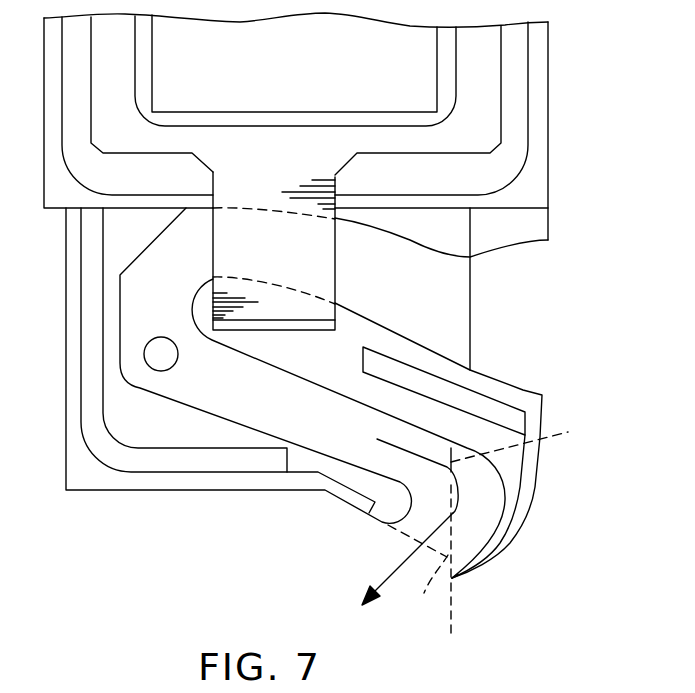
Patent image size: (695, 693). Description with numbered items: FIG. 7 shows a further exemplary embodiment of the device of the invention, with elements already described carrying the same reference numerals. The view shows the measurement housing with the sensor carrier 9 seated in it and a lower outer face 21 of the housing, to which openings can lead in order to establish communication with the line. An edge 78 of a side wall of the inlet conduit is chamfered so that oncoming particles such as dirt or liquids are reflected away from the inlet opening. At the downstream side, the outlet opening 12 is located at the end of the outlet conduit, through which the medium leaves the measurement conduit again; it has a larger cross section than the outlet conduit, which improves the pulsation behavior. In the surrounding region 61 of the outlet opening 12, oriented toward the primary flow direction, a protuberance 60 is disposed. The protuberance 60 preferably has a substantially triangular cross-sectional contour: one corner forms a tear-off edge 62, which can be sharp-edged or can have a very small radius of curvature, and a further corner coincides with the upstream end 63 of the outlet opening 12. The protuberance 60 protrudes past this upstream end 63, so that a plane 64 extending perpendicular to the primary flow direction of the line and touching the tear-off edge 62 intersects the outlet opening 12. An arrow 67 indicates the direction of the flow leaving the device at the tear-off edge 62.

The sensor carrier 9 is at (335, 192).
The outlet opening 12 is at (418, 573).
The lower outer face 21 is at (290, 492).
The protuberance 60 is at (480, 575).
The surrounding region 61 is at (521, 533).
The tear-off edge 62 is at (455, 583).
The upstream end of the outlet opening 63 is at (455, 572).
The plane 64 is at (526, 441).
The direction of travel 67 is at (373, 586).
The edge 78 is at (470, 290).